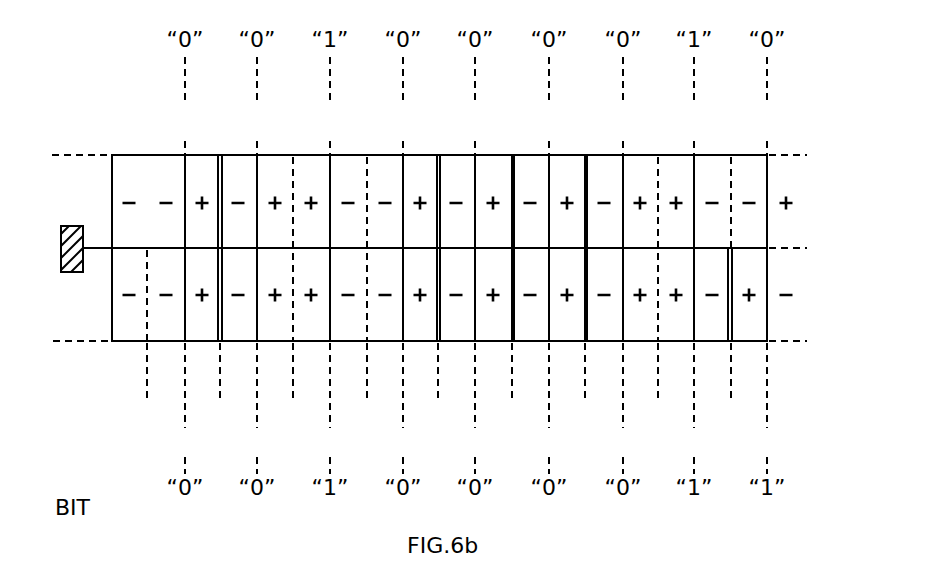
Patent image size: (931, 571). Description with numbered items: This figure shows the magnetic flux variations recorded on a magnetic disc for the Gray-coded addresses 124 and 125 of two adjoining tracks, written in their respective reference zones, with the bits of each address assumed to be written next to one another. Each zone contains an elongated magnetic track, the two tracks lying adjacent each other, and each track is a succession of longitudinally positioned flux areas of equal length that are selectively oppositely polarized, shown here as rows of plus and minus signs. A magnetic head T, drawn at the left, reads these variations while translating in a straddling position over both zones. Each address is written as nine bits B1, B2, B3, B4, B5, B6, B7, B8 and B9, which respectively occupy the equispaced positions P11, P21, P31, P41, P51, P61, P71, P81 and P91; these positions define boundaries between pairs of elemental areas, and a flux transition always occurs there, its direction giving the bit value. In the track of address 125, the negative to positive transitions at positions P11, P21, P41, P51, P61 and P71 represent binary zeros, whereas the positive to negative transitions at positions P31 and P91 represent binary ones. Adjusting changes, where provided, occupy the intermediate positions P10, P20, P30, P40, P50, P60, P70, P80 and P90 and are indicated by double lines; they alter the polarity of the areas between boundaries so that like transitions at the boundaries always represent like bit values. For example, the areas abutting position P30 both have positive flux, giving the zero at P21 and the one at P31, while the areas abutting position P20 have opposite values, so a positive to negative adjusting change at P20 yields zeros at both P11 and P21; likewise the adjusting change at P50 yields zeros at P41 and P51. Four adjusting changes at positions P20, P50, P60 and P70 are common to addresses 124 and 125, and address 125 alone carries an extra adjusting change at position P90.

The address 124 is at (133, 109).
The address 125 is at (80, 384).
The magnetic head T is at (84, 271).
The bit B1 is at (184, 199).
The bit B2 is at (256, 199).
The bit B3 is at (329, 199).
The bit B4 is at (402, 199).
The bit B5 is at (474, 199).
The bit B6 is at (548, 199).
The bit B7 is at (622, 199).
The bit B8 is at (693, 199).
The bit B9 is at (766, 199).
The position P10 is at (145, 385).
The position P11 is at (182, 408).
The position P20 is at (227, 385).
The position P21 is at (257, 408).
The position P30 is at (290, 385).
The position P31 is at (330, 408).
The position P40 is at (367, 385).
The position P41 is at (405, 408).
The position P50 is at (438, 385).
The position P51 is at (475, 408).
The position P60 is at (507, 385).
The position P61 is at (550, 408).
The position P70 is at (580, 385).
The position P71 is at (623, 408).
The position P80 is at (656, 385).
The position P81 is at (690, 408).
The position P90 is at (728, 385).
The position P91 is at (765, 408).